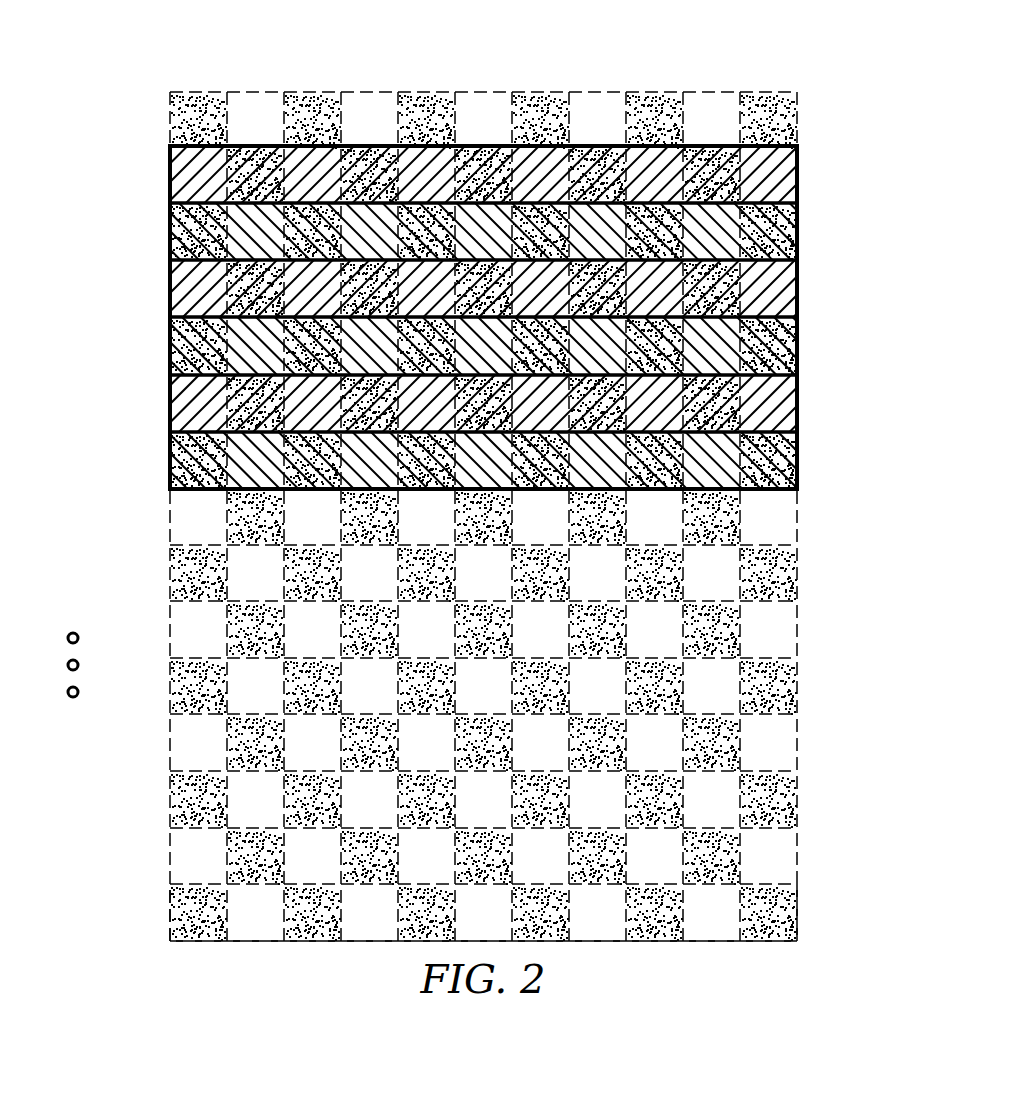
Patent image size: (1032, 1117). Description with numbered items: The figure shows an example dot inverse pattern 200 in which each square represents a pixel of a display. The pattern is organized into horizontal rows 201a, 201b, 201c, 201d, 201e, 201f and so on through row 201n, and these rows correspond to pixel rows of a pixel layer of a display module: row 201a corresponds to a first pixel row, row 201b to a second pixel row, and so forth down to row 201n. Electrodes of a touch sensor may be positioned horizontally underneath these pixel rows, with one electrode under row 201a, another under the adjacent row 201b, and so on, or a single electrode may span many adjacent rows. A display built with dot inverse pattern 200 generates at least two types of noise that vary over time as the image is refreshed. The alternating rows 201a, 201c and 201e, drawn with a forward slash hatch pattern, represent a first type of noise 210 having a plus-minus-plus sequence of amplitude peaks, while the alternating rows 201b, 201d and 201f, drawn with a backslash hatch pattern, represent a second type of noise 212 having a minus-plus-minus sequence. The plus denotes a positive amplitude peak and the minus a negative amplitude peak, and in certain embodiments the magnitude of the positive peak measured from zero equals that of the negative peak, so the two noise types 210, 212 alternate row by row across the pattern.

The dot inverse pattern 200 is at (616, 61).
The row 201a is at (165, 171).
The row 201b is at (165, 229).
The row 201c is at (165, 286).
The row 201d is at (165, 343).
The row 201e is at (165, 401).
The row 201f is at (165, 458).
The row 201n is at (165, 918).
The first type of noise 210 is at (777, 175).
The second type of noise 212 is at (777, 232).